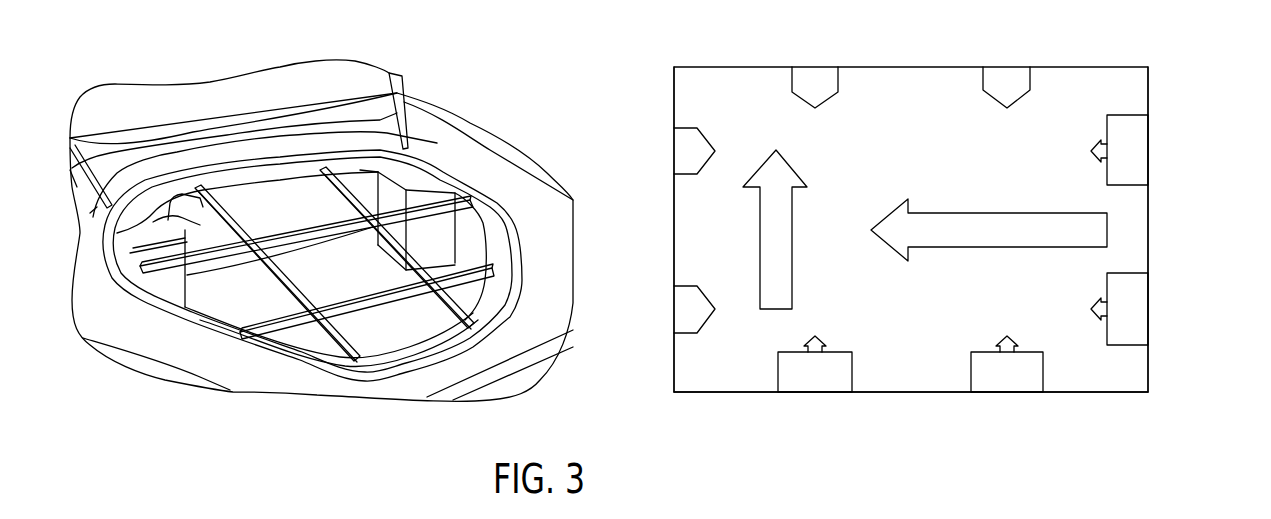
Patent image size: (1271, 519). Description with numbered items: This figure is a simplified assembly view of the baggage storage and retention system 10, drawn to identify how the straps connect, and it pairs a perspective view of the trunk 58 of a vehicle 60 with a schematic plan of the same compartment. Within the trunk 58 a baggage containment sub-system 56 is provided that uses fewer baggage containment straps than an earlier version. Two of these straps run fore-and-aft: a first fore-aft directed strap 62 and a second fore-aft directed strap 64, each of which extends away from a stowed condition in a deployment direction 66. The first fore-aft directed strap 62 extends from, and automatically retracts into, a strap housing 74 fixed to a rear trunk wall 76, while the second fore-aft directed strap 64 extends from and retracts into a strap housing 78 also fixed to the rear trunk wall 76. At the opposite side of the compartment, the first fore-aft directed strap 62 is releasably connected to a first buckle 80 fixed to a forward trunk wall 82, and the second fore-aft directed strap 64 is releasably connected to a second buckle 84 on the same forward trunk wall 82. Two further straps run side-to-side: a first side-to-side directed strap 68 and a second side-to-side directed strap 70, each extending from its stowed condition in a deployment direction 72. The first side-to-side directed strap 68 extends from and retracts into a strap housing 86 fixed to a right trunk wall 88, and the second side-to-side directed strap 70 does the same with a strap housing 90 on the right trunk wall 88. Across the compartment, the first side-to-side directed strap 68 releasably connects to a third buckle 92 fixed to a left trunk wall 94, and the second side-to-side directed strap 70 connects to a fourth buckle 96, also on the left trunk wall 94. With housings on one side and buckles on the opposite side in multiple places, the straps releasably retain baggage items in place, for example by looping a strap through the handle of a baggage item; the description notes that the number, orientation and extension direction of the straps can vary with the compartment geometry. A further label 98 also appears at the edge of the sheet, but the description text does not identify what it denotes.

The baggage storage and retention system 10 is at (424, 93).
The baggage containment sub-system 56 is at (441, 182).
The trunk 58 is at (113, 240).
The vehicle 60 is at (121, 112).
The first fore-aft directed strap 62 is at (820, 343).
The second fore-aft directed strap 64 is at (1007, 343).
The deployment direction 66 is at (777, 260).
The first side-to-side directed strap 68 is at (1095, 145).
The second side-to-side directed strap 70 is at (1095, 300).
The deployment direction 72 is at (947, 227).
The strap housing 74 is at (815, 375).
The rear trunk wall 76 is at (1088, 393).
The strap housing 78 is at (1007, 375).
The first buckle 80 is at (817, 78).
The forward trunk wall 82 is at (1088, 67).
The second buckle 84 is at (1007, 78).
The strap housing 86 is at (1130, 152).
The right trunk wall 88 is at (1148, 92).
The strap housing 90 is at (1130, 308).
The third buckle 92 is at (692, 147).
The left trunk wall 94 is at (673, 92).
The fourth buckle 96 is at (692, 305).
The component 98 is at (1074, 514).